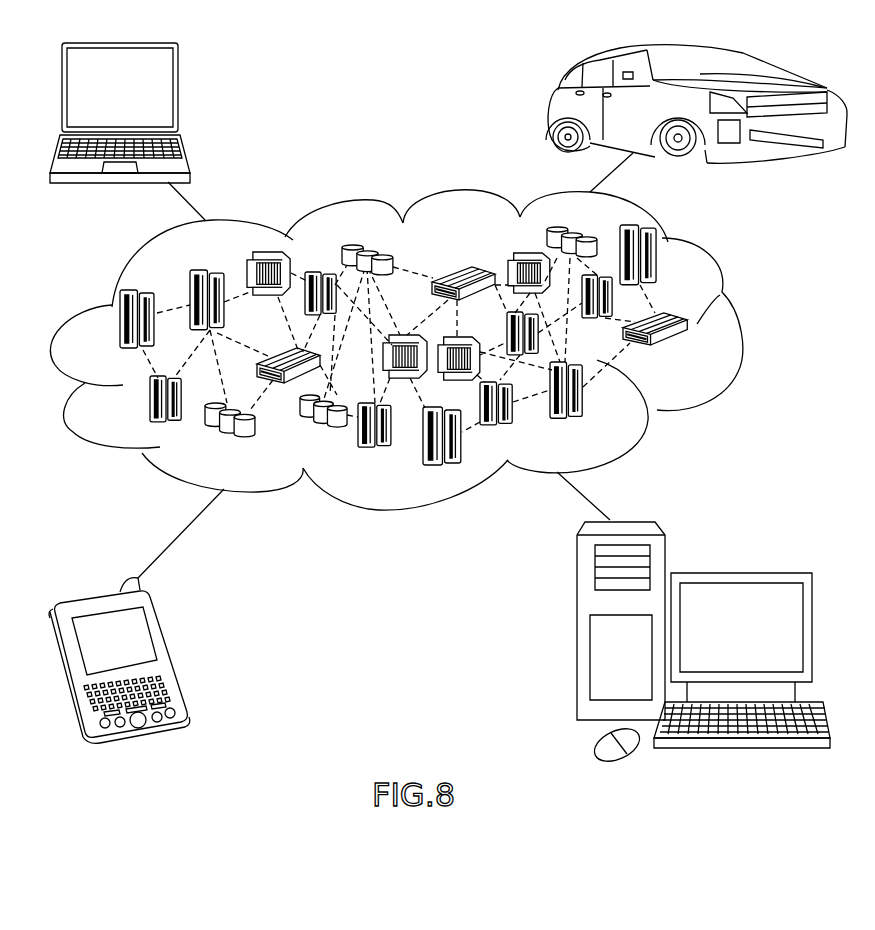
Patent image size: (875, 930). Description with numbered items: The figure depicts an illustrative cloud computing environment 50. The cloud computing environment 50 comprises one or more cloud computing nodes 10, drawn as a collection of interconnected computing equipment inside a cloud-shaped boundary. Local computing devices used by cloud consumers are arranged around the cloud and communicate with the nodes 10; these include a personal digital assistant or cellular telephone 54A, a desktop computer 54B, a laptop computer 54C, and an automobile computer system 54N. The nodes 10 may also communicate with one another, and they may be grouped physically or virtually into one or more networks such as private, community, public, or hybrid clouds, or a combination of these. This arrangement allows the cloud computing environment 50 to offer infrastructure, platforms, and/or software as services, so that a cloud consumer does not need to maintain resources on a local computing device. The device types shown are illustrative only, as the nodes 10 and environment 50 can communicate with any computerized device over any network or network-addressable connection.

The cloud computing nodes 10 is at (700, 357).
The cloud computing environment 50 is at (742, 330).
The personal digital assistant or cellular telephone 54A is at (172, 653).
The desktop computer 54B is at (738, 573).
The laptop computer 54C is at (178, 93).
The automobile computer system 54N is at (555, 108).